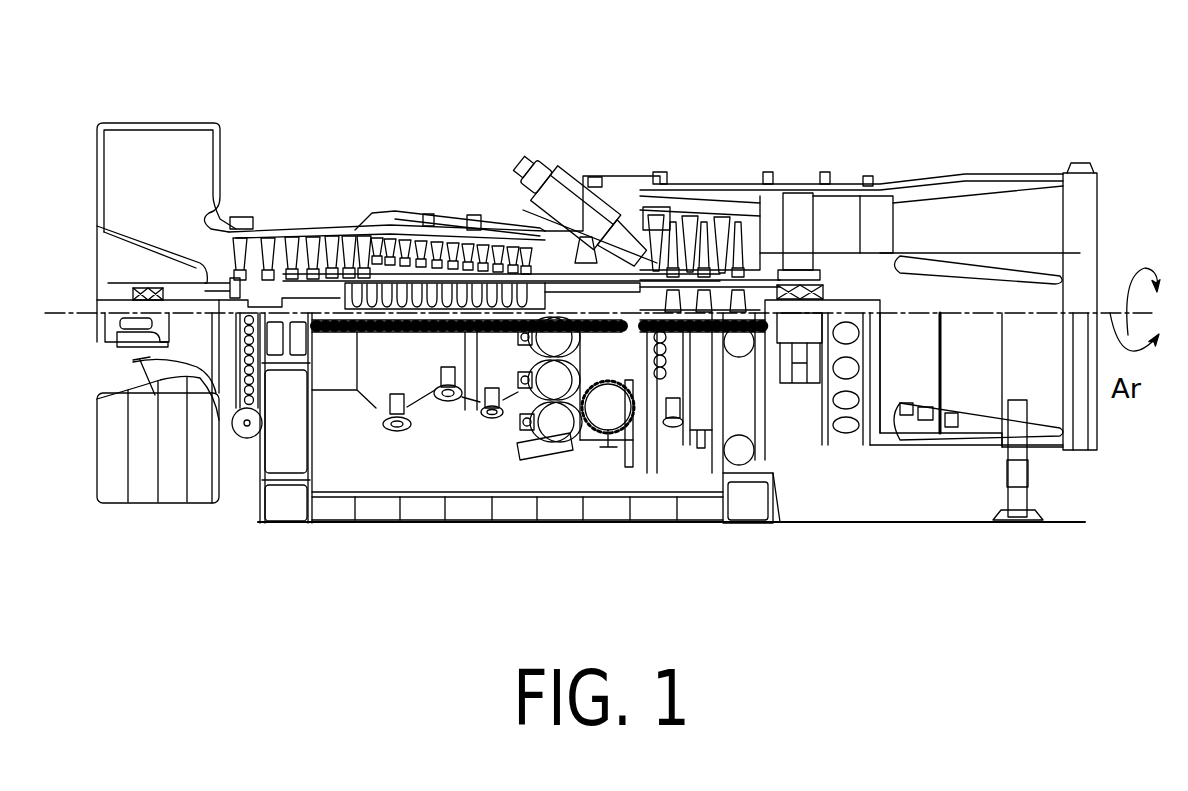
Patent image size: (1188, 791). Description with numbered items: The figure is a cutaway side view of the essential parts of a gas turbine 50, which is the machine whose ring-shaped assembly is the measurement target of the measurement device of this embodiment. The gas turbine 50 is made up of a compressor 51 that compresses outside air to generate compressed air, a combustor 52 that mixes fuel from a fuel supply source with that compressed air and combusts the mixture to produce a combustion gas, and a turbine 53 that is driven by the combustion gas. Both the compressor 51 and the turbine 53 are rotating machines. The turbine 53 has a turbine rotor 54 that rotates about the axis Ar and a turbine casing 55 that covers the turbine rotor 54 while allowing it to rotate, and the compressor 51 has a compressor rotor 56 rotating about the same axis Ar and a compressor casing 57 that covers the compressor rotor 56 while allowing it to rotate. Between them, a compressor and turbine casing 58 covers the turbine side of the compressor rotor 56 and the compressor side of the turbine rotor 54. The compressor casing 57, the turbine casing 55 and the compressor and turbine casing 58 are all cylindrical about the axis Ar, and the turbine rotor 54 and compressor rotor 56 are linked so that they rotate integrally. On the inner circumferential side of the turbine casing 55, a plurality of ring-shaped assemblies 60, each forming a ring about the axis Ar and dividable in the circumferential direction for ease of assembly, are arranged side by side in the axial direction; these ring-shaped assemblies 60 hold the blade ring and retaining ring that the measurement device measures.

The gas turbine 50 is at (934, 94).
The compressor 51 is at (342, 432).
The combustor 52 is at (555, 153).
The turbine 53 is at (698, 466).
The turbine rotor 54 is at (717, 300).
The turbine casing 55 is at (757, 177).
The compressor rotor 56 is at (307, 283).
The compressor casing 57 is at (400, 214).
The compressor and turbine casing 58 is at (490, 222).
The ring-shaped assembly 60 is at (730, 224).